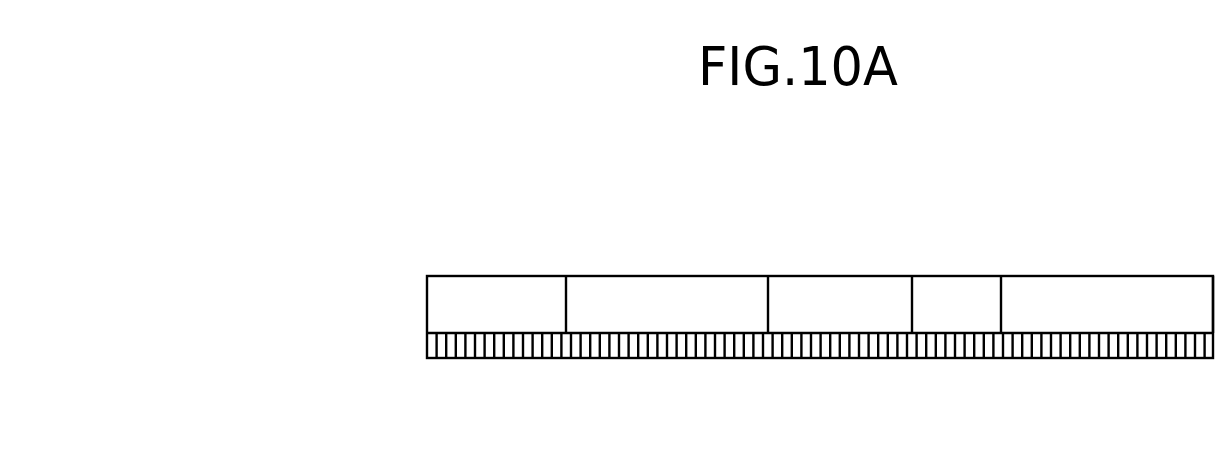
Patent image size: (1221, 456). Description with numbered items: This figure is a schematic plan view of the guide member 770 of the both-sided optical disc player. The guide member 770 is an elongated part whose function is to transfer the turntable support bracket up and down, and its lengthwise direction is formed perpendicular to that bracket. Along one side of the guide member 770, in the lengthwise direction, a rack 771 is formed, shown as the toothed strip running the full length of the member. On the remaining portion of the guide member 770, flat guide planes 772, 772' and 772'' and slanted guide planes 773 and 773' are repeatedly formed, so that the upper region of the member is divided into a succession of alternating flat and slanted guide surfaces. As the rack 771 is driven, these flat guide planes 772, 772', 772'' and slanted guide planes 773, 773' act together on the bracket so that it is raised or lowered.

The guide member 770 is at (456, 266).
The rack 771 is at (1138, 355).
The flat guide plane 772 is at (1163, 267).
The flat guide plane 772' is at (891, 275).
The flat guide plane 772'' is at (572, 275).
The slanted guide plane 773 is at (1011, 275).
The slanted guide plane 773' is at (719, 275).